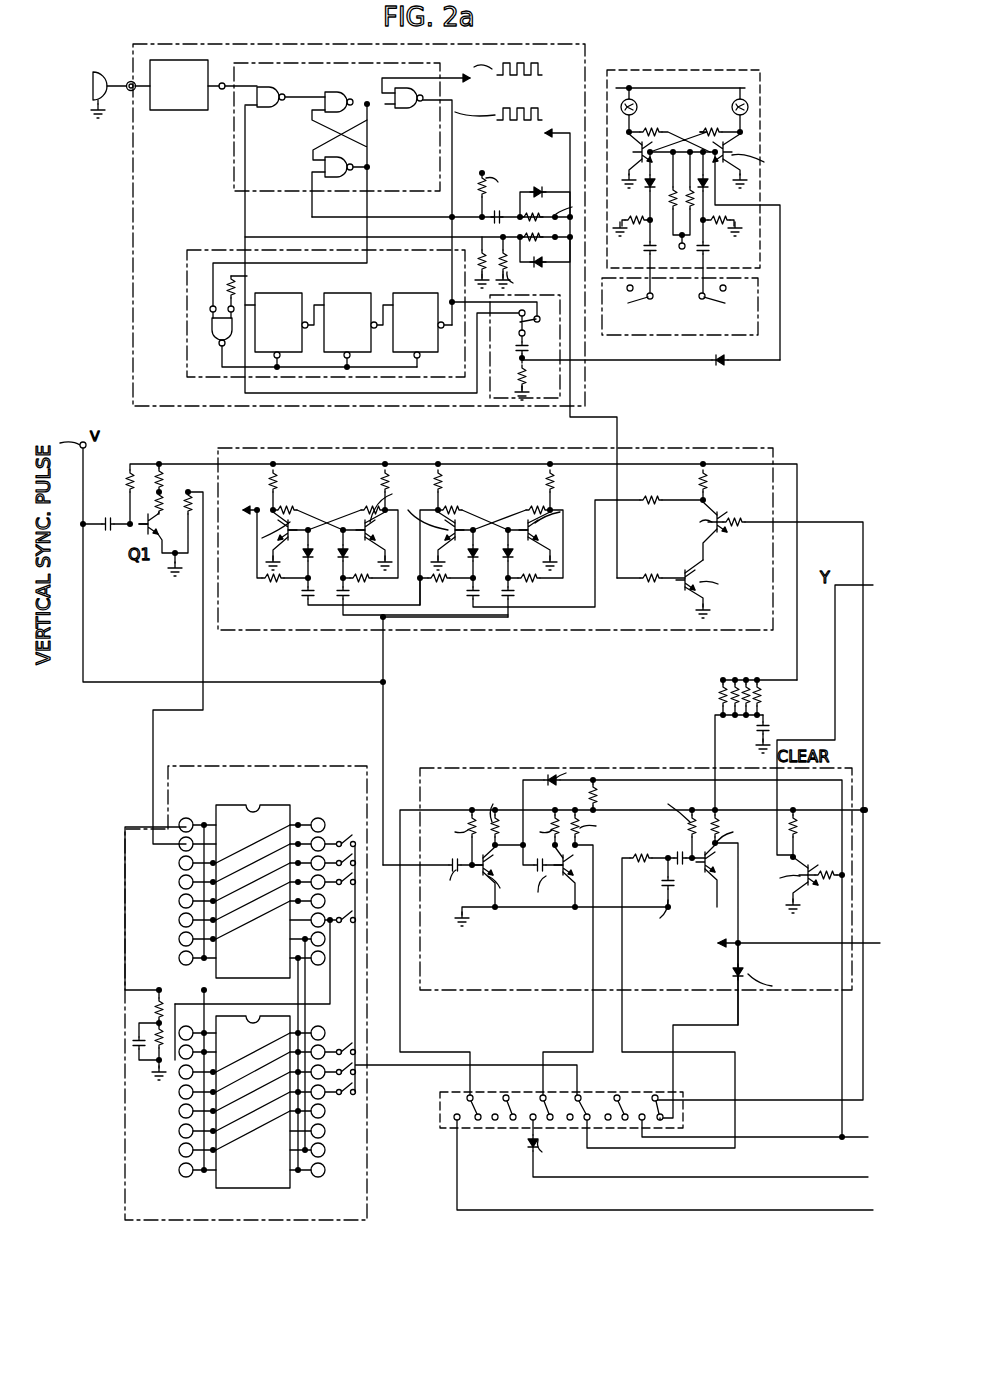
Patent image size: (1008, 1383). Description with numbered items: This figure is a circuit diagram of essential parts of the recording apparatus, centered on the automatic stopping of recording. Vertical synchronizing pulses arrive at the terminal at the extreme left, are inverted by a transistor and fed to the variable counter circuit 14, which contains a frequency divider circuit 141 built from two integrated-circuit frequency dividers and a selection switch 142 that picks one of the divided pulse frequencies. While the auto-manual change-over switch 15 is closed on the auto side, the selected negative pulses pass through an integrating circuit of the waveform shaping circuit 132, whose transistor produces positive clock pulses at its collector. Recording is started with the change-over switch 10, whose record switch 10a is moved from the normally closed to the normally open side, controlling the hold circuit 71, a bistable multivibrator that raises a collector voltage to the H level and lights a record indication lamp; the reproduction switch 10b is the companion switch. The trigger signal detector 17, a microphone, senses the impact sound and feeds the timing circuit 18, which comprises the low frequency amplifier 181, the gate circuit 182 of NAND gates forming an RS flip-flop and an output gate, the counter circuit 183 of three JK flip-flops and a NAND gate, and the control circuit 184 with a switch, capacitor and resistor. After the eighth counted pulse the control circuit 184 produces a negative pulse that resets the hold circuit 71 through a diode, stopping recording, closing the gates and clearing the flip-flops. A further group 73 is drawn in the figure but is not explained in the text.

The trigger signal detector 17 is at (100, 70).
The timing circuit 18 is at (578, 44).
The low frequency amplifier 181 is at (180, 110).
The gate circuit 182 is at (234, 150).
The counter circuit 183 is at (187, 286).
The control circuit 184 is at (550, 400).
The hold circuit 71 is at (762, 122).
The change-over switch 10 is at (758, 330).
The record switch 10a is at (630, 318).
The reproduction switch 10b is at (705, 320).
The pulse generating circuit 73 is at (636, 450).
The variable counter circuit 14 is at (250, 766).
The frequency divider circuit 141 is at (272, 805).
The selection switch 142 is at (335, 835).
The waveform shaping circuit 132 is at (472, 770).
The auto-manual change-over switch 15 is at (440, 1104).